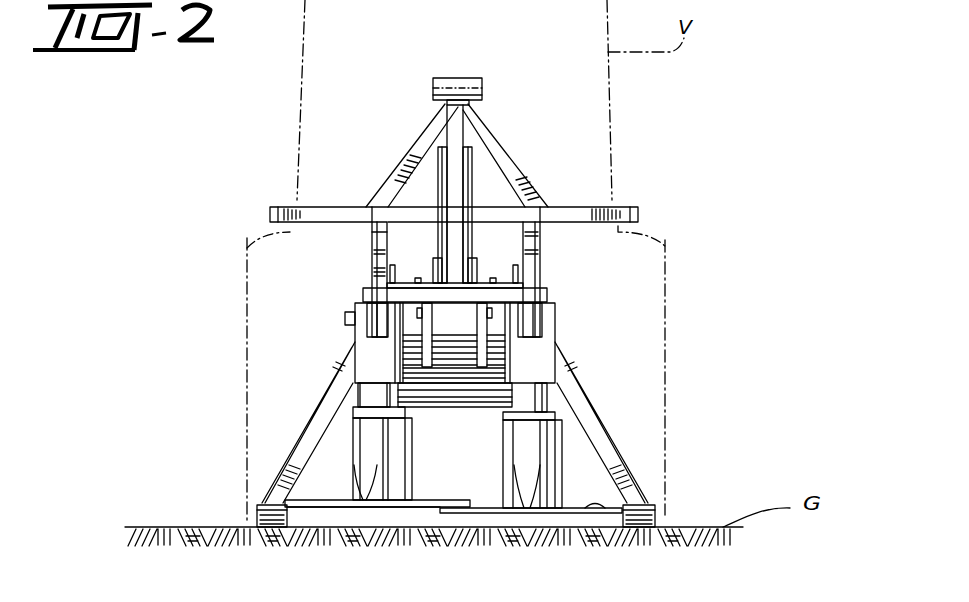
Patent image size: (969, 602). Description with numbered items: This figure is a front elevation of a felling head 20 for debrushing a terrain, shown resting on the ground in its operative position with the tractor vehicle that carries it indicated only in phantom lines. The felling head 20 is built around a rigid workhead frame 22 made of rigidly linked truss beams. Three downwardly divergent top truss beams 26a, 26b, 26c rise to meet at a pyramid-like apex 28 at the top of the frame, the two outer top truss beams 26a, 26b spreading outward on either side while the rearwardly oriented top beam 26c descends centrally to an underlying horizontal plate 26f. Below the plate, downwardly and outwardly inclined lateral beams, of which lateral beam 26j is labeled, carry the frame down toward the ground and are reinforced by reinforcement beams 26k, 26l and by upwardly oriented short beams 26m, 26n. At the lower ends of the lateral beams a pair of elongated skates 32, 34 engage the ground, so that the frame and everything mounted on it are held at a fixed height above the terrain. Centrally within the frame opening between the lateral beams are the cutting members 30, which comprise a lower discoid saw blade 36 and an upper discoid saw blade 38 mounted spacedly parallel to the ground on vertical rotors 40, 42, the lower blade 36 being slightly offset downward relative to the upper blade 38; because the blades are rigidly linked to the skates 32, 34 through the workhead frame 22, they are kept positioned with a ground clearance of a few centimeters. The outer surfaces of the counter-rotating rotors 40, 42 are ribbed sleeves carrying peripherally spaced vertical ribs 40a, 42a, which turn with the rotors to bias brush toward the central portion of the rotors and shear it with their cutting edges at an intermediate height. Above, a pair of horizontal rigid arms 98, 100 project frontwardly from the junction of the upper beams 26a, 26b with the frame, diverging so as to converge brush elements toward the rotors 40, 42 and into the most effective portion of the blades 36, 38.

The felling head 20 is at (593, 322).
The workhead frame 22 is at (362, 257).
The top truss beam 26a is at (505, 147).
The top truss beam 26b is at (426, 118).
The top truss beam 26c is at (455, 185).
The horizontal plate 26f is at (548, 286).
The lateral beam 26j is at (317, 443).
The reinforcement beam 26k is at (335, 373).
The reinforcement beam 26l is at (575, 366).
The upwardly oriented short beam 26m is at (372, 235).
The upwardly oriented short beam 26n is at (540, 240).
The apex 28 is at (463, 78).
The cutting members 30 is at (438, 490).
The skate 32 is at (650, 505).
The skate 34 is at (268, 507).
The lower discoid saw blade 36 is at (600, 508).
The upper discoid saw blade 38 is at (307, 508).
The vertical rotor 40 is at (530, 443).
The vertical rib 40a is at (535, 515).
The vertical rotor 42 is at (390, 437).
The vertical rib 42a is at (362, 508).
The rigid arm 98 is at (283, 203).
The rigid arm 100 is at (626, 203).